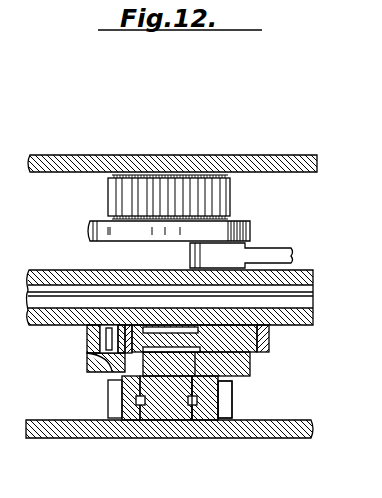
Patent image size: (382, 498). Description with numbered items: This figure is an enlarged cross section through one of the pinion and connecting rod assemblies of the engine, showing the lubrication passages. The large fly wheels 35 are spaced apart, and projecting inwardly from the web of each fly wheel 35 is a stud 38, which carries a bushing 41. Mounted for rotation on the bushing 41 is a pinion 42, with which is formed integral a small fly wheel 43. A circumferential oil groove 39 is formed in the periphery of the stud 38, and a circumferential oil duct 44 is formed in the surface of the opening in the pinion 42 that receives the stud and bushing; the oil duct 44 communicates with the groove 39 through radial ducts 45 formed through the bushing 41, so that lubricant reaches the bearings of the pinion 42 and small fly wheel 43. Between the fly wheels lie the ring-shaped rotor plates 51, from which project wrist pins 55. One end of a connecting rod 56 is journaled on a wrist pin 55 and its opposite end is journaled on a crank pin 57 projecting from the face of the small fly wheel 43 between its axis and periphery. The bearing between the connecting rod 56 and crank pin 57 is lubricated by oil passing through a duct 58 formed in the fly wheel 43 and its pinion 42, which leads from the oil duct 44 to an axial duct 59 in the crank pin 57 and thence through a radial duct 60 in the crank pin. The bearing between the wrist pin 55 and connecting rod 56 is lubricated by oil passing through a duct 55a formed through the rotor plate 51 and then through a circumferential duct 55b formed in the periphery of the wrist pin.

The fly wheel 35 is at (252, 166).
The pinion 42 is at (180, 190).
The small fly wheel 43 is at (232, 232).
The connecting rod 56 is at (256, 262).
The ring-shaped plate 51 is at (305, 312).
The axial duct 59 is at (109, 328).
The crank pin 57 is at (130, 330).
The duct 55a is at (256, 340).
The circumferential duct 55b is at (270, 344).
The wrist pin 55 is at (253, 365).
The bushing 41 is at (232, 393).
The radial duct 60 is at (97, 370).
The duct 58 is at (112, 380).
The radial duct 45 is at (139, 406).
The stud 38 is at (166, 410).
The circumferential oil groove 39 is at (192, 406).
The circumferential oil duct 44 is at (208, 406).